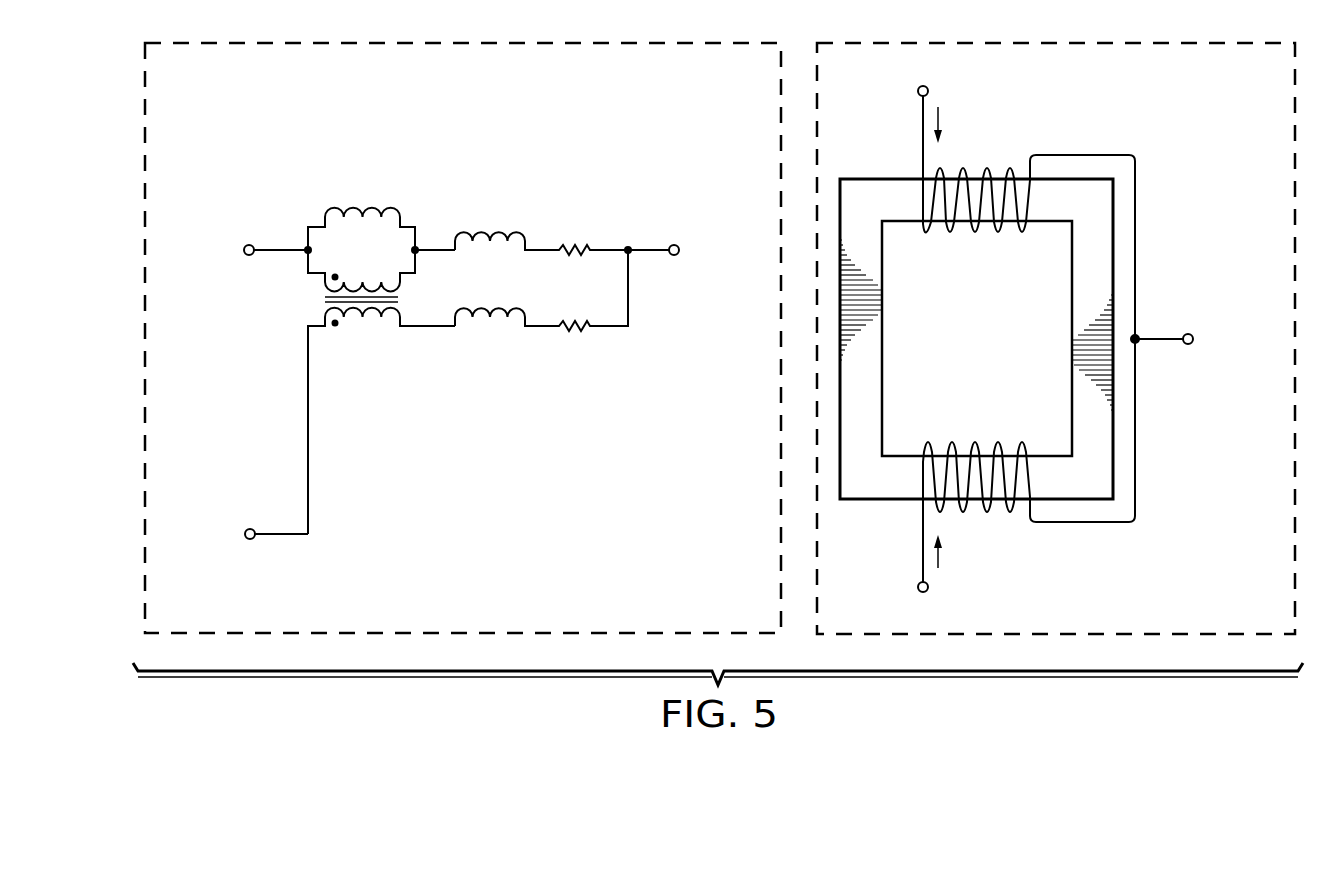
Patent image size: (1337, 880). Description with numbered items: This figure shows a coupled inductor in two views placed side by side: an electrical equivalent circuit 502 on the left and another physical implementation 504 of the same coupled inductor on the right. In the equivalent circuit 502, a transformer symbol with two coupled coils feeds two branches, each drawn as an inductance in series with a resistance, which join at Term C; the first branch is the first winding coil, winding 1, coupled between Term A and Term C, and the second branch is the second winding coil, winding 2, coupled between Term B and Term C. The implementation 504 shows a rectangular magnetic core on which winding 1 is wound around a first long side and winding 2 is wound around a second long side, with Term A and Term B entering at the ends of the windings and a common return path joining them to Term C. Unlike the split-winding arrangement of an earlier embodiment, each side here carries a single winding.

The schematic circuit representation of the transformer with two windings 502 is at (463, 338).
The physical representation of the transformer core with windings 504 is at (1240, 516).
The winding 1 is at (556, 229).
The winding 2 is at (533, 290).